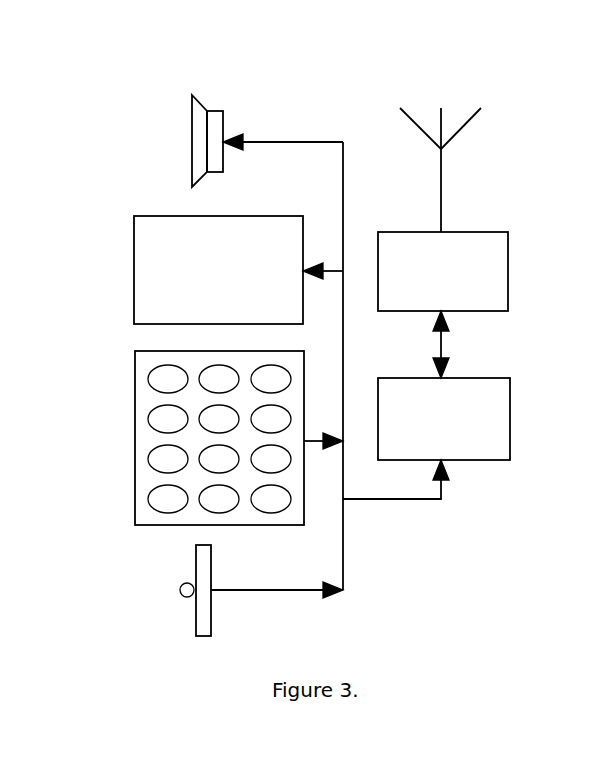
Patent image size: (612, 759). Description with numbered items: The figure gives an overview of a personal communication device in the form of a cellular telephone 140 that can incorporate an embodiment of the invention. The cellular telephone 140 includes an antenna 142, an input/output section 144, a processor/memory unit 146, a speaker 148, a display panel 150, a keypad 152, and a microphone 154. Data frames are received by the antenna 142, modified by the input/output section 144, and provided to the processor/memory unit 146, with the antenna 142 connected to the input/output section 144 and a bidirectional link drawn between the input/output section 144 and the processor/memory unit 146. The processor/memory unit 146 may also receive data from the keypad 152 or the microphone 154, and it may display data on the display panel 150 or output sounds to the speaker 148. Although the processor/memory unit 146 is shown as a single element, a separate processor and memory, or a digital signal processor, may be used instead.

The cellular telephone 140 is at (262, 59).
The antenna 142 is at (459, 170).
The input/output section 144 is at (483, 271).
The processor/memory unit 146 is at (483, 419).
The speaker 148 is at (193, 141).
The display panel 150 is at (194, 270).
The keypad 152 is at (195, 438).
The microphone 154 is at (195, 590).